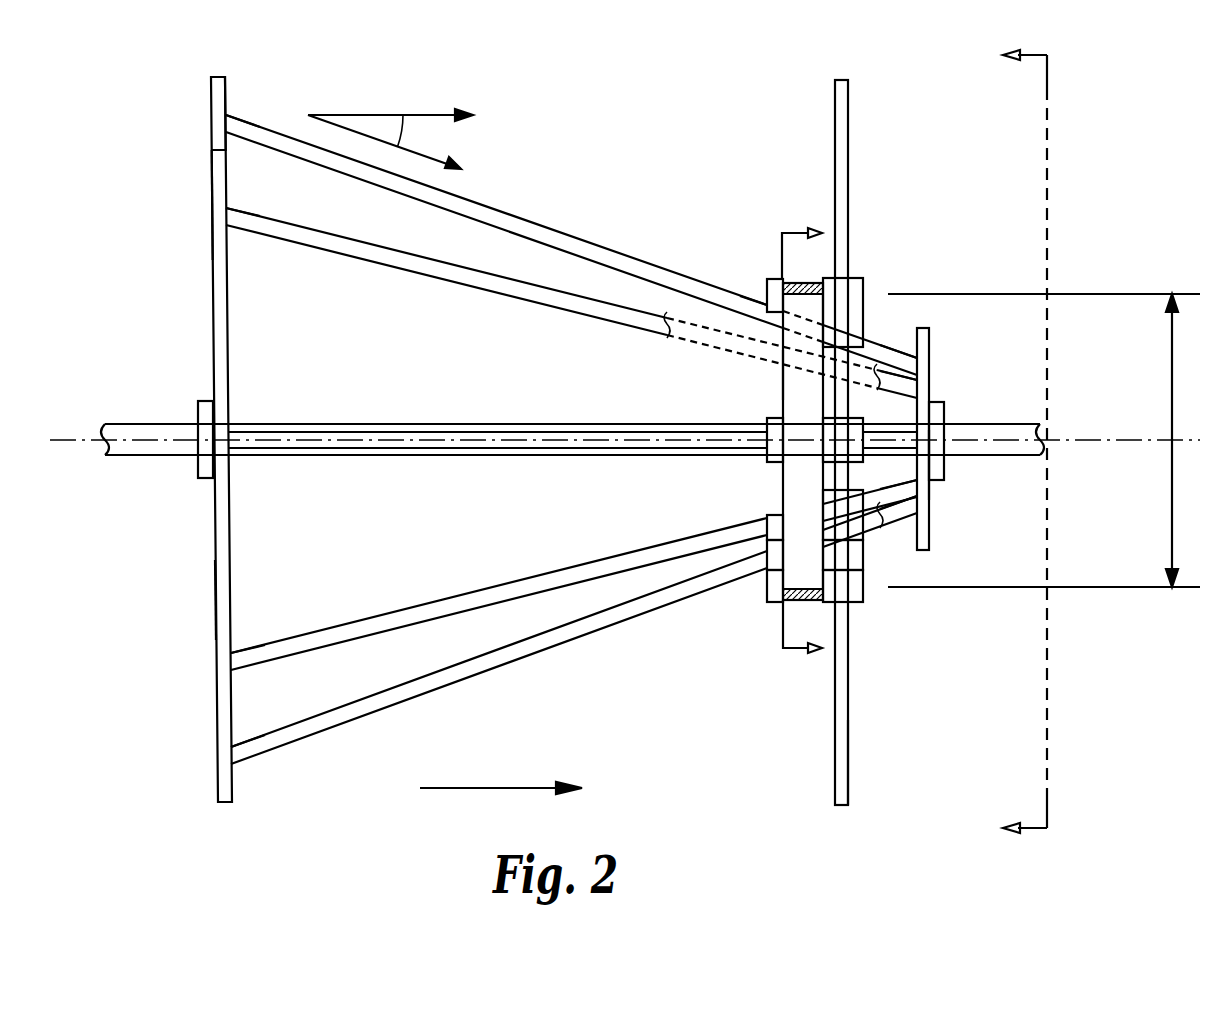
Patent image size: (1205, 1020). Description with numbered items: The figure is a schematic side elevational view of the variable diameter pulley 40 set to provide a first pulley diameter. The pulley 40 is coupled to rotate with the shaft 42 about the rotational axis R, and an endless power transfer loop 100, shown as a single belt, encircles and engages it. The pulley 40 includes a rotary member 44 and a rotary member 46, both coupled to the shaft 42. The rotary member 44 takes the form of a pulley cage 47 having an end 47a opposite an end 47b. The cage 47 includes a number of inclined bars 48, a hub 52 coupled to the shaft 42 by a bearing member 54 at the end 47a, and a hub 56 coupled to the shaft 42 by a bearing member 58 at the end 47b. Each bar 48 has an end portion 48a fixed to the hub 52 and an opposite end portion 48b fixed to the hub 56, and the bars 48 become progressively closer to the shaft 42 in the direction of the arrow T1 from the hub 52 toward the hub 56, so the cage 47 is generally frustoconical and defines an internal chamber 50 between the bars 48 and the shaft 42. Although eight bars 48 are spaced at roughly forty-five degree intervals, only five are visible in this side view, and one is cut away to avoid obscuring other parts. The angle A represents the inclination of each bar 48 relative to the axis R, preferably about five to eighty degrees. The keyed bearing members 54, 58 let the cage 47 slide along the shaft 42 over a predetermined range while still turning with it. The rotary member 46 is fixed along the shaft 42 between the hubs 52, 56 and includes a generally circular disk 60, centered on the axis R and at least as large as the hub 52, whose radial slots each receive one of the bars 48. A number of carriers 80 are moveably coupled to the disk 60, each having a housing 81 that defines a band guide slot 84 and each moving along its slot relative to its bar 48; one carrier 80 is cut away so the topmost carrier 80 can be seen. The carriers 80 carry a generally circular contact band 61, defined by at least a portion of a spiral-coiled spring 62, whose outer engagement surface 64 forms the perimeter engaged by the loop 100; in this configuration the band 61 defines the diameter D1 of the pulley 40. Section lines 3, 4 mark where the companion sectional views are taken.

The variable diameter pulley 40 is at (581, 172).
The shaft 42 is at (150, 423).
The rotary member 44 is at (213, 690).
The rotary member 46 is at (835, 92).
The pulley cage 47 is at (215, 605).
The end 47a is at (212, 258).
The end 47b is at (930, 470).
The inclined bars 48 is at (337, 235).
The end portion 48a is at (258, 143).
The end portion 48b is at (898, 353).
The internal chamber 50 is at (475, 252).
The hub 52 is at (211, 148).
The bearing member 54 is at (201, 478).
The hub 56 is at (930, 355).
The bearing member 58 is at (945, 412).
The disk 60 is at (848, 760).
The contact band 61 is at (797, 478).
The spiral-coiled spring 62 is at (775, 323).
The engagement surface 64 is at (818, 369).
The carriers 80 is at (864, 307).
The housing 81 is at (863, 292).
The band guide slot 84 is at (832, 284).
The endless power transfer loop 100 is at (800, 283).
The angle A is at (403, 132).
The arrow T1 is at (480, 788).
The rotational axis R is at (68, 439).
The diameter D1 is at (1044, 440).
The section line 3- 3 is at (1040, 442).
The section line 4- 4 is at (787, 442).